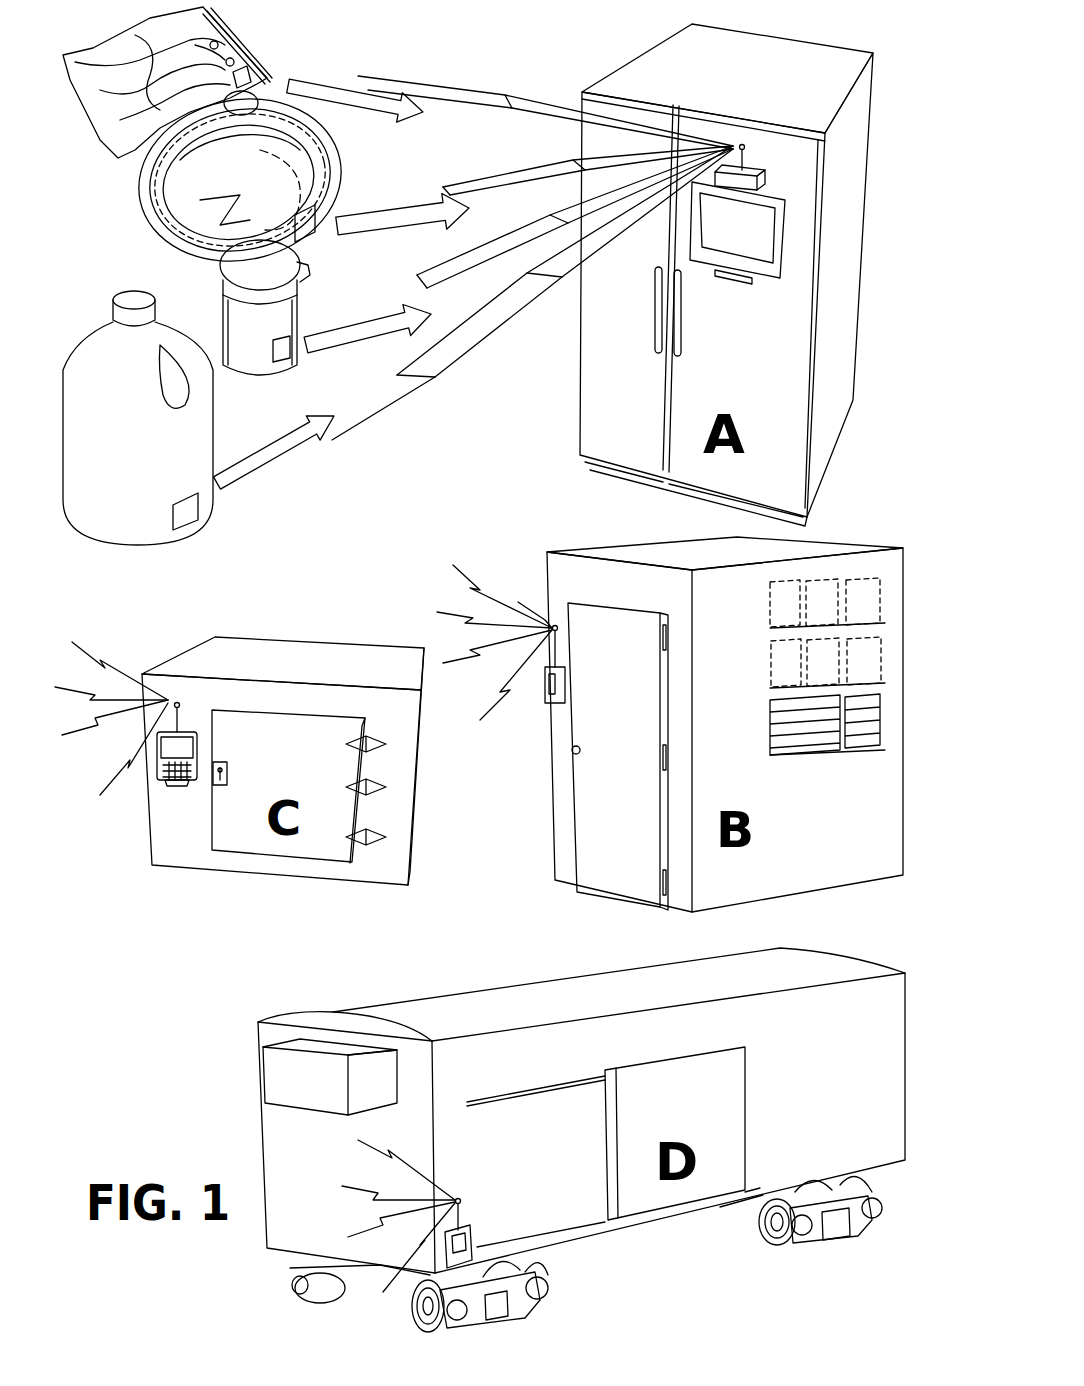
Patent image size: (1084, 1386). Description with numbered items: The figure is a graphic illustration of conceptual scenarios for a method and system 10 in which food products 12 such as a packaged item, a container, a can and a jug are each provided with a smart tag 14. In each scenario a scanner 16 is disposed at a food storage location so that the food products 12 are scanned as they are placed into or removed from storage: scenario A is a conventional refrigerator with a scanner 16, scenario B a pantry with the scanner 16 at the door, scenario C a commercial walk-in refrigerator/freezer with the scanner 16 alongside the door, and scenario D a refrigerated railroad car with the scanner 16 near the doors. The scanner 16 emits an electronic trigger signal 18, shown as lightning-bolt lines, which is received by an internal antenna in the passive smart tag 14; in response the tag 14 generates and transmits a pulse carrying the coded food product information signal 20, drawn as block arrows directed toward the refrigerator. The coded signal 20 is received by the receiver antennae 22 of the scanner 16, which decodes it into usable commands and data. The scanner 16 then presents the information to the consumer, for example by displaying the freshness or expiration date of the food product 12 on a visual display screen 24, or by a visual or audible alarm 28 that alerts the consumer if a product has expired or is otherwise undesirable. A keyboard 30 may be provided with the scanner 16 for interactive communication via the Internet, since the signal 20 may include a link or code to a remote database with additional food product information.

The method and system 10 is at (519, 80).
The food products 12 is at (118, 150).
The smart tag 14 is at (258, 60).
The scanner 16 is at (765, 182).
The trigger signal 18 is at (436, 78).
The food product information signal 20 is at (418, 110).
The receiver antennae 22 is at (745, 152).
The visual display screen 24 is at (775, 232).
The alarm 28 is at (742, 284).
The keyboard 30 is at (196, 783).